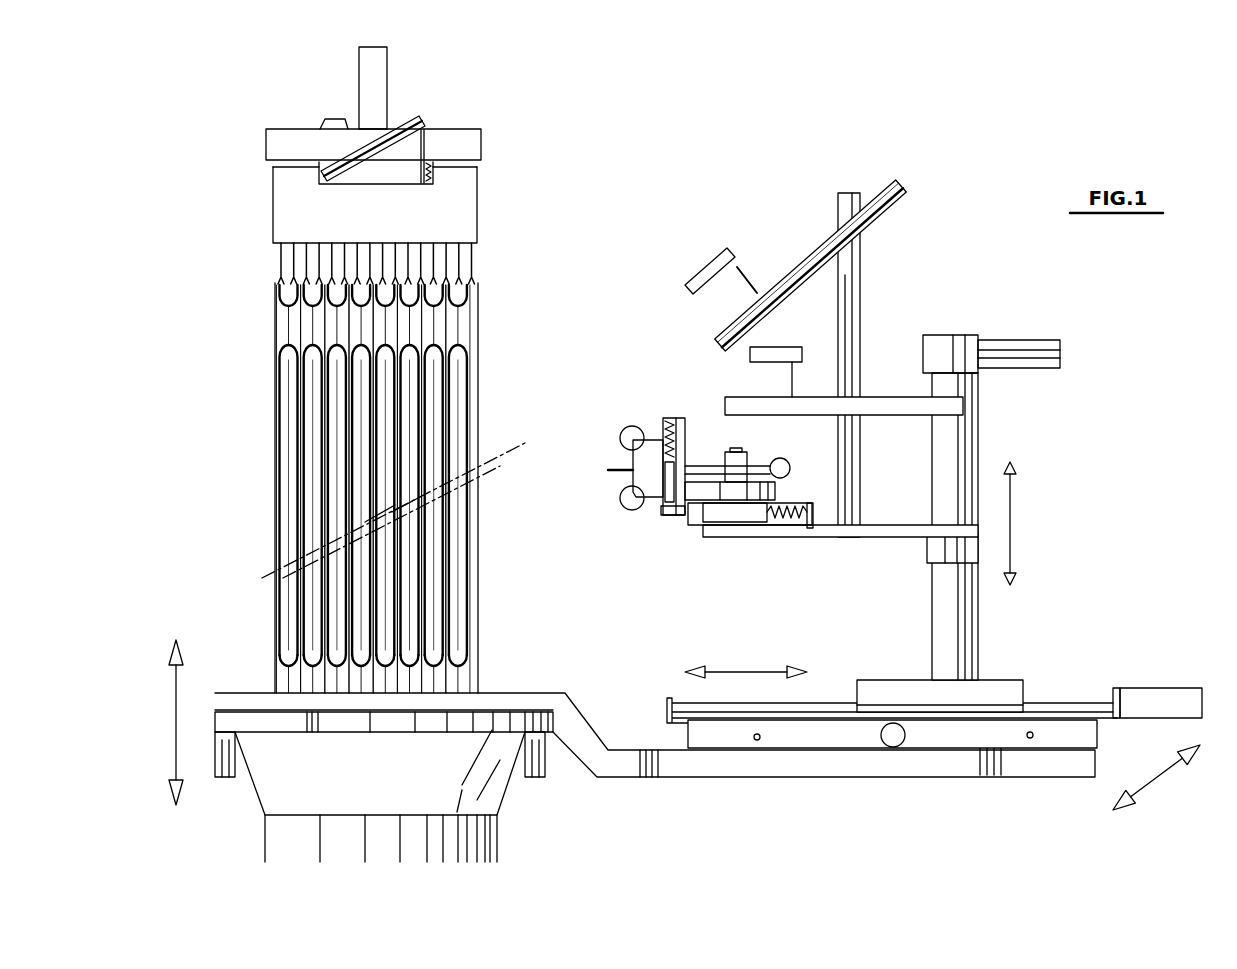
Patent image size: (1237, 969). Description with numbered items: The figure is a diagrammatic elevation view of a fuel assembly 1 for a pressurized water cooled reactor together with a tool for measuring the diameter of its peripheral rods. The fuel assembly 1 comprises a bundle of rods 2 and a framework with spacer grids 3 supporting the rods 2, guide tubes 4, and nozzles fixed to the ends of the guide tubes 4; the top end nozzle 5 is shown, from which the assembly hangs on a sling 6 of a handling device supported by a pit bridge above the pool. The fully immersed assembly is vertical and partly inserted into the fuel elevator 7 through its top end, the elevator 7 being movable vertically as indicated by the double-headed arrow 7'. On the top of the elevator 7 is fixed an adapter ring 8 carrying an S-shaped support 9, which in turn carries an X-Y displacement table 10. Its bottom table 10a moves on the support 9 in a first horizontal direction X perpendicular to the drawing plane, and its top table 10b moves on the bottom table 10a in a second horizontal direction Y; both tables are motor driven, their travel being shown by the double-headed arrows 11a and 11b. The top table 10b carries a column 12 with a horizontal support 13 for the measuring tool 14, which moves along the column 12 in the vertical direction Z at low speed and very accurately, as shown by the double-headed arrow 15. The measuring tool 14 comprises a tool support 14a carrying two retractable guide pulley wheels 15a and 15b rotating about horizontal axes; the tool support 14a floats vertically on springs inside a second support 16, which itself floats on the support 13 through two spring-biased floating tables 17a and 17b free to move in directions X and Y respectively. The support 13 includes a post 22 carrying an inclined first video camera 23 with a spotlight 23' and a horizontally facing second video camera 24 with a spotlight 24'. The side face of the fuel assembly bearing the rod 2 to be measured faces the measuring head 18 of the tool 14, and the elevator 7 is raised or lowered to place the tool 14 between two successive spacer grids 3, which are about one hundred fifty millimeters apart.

The fuel assembly 1 is at (262, 390).
The rods 2 is at (470, 580).
The spacer grids 3 is at (466, 327).
The guide tubes 4 is at (440, 265).
The top end nozzle 5 is at (469, 198).
The sling 6 is at (375, 88).
The fuel elevator 7 is at (385, 796).
The double-headed arrow 7' is at (157, 722).
The adapter ring 8 is at (547, 725).
The support 9 is at (622, 762).
The X-Y displacement table 10 is at (1043, 675).
The bottom table 10a is at (950, 740).
The top table 10b is at (908, 692).
The double-headed arrow 11a is at (1160, 778).
The double-headed arrow 11b is at (760, 672).
The column 12 is at (970, 645).
The horizontal support 13 is at (814, 530).
The measuring tool 14 is at (652, 405).
The tool support 14a is at (655, 498).
The double-headed arrow 15 is at (1010, 546).
The retractable guide pulley wheel 15a is at (628, 432).
The retractable guide pulley wheel 15b is at (624, 505).
The second support 16 is at (672, 510).
The floating table 17a is at (752, 488).
The floating table 17b is at (785, 492).
The measuring head 18 is at (610, 468).
The post 22 is at (860, 293).
The first video camera 23 is at (811, 265).
The spotlight 23' is at (705, 262).
The second video camera 24 is at (844, 374).
The spotlight 24' is at (788, 350).